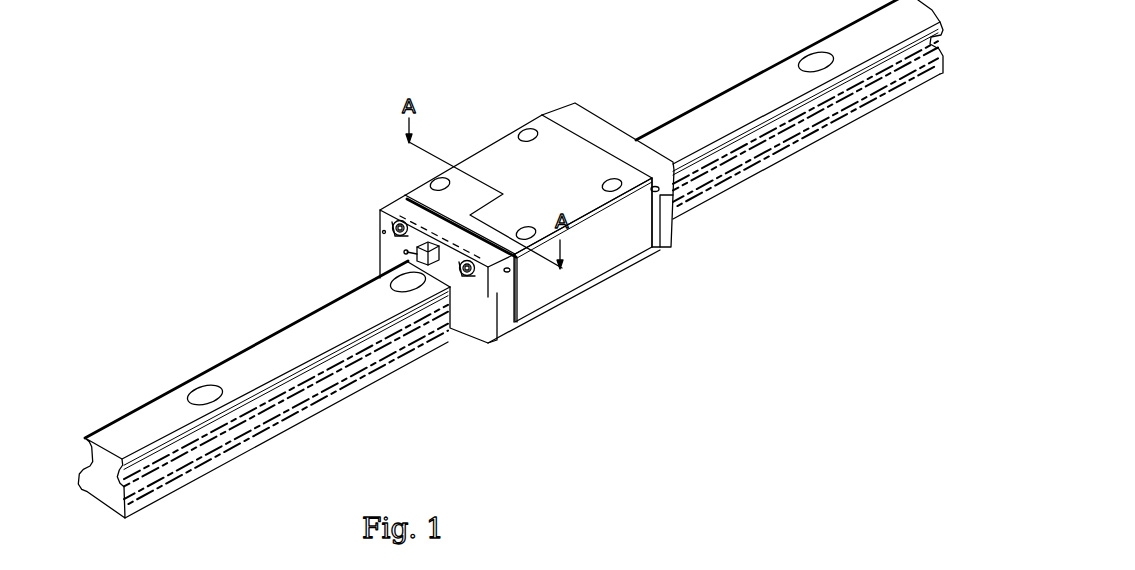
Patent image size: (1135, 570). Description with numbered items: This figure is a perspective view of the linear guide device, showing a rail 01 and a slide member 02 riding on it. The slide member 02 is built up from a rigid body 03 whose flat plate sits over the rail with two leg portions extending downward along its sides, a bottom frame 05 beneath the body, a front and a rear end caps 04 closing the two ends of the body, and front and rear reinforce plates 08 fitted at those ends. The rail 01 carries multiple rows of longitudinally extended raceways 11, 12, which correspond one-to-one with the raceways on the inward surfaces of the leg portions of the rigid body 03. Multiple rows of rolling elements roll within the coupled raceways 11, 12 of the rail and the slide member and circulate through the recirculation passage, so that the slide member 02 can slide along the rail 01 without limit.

The rail 01 is at (282, 356).
The slide member 02 is at (475, 152).
The rigid body 03 is at (517, 172).
The end caps 04 is at (575, 126).
The bottom frame 05 is at (575, 290).
The reinforce plates 08 is at (472, 308).
The raceway 11 is at (82, 448).
The raceway 12 is at (190, 462).